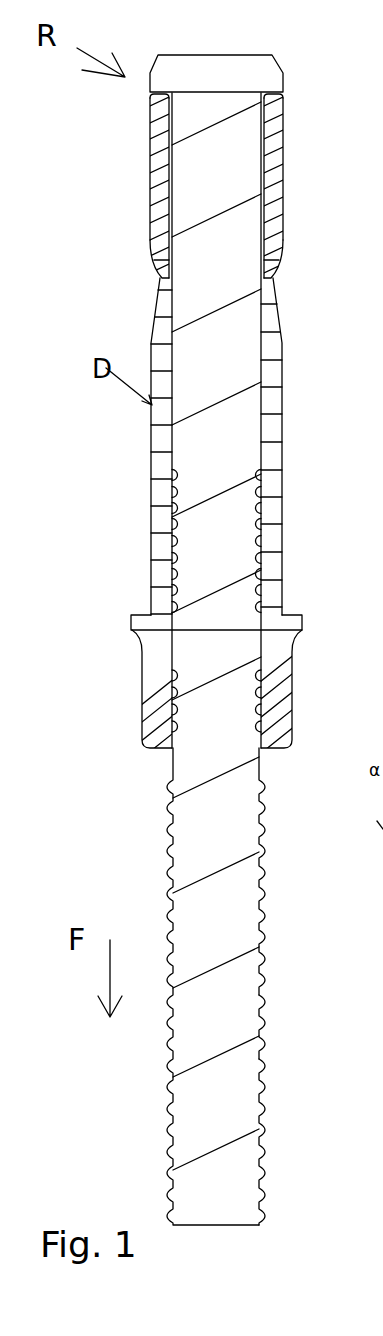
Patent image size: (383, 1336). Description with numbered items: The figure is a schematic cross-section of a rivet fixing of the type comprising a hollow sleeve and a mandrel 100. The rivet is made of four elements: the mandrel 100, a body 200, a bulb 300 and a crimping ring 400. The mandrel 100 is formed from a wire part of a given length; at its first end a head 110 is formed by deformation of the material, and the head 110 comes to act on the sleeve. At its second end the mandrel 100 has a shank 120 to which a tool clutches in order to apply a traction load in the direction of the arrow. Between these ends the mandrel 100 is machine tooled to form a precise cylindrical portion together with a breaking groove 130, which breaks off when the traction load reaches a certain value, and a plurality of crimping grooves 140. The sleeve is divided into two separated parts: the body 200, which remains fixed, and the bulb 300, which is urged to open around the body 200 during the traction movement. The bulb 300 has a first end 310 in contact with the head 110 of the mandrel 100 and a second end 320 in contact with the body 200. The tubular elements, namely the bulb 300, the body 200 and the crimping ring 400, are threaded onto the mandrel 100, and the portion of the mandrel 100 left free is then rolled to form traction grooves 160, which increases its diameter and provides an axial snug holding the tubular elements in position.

The mandrel 100 is at (248, 283).
The head 110 is at (268, 75).
The shank 120 is at (228, 932).
The breaking groove 130 is at (256, 634).
The crimping grooves 140 is at (262, 543).
The traction grooves 160 is at (260, 1024).
The body 200 is at (275, 465).
The bulb 300 is at (271, 191).
The first end 310 is at (162, 102).
The second end 320 is at (152, 249).
The crimping ring 400 is at (273, 692).